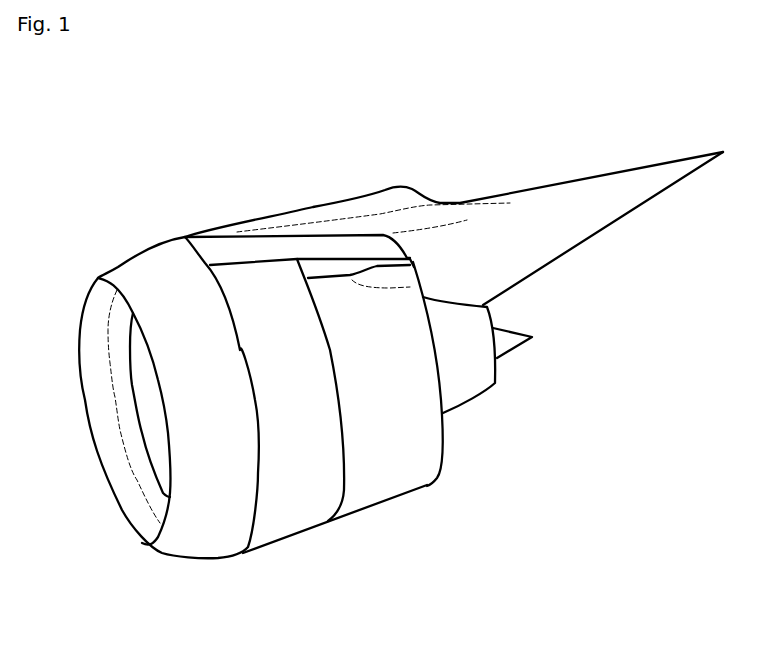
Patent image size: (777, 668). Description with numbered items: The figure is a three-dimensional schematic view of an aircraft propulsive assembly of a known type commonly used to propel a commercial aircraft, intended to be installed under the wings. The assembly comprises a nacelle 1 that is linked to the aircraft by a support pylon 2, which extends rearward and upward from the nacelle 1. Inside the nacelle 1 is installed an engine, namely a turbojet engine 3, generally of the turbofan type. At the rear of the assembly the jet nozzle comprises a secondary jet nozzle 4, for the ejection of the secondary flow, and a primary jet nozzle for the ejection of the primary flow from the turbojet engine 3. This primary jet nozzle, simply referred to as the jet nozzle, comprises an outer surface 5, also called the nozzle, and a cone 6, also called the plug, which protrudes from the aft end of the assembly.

The nacelle 1 is at (155, 252).
The support pylon 2 is at (468, 237).
The turbojet engine 3 is at (281, 352).
The secondary jet nozzle 4 is at (383, 457).
The outer surface 5 is at (473, 370).
The cone 6 is at (520, 350).